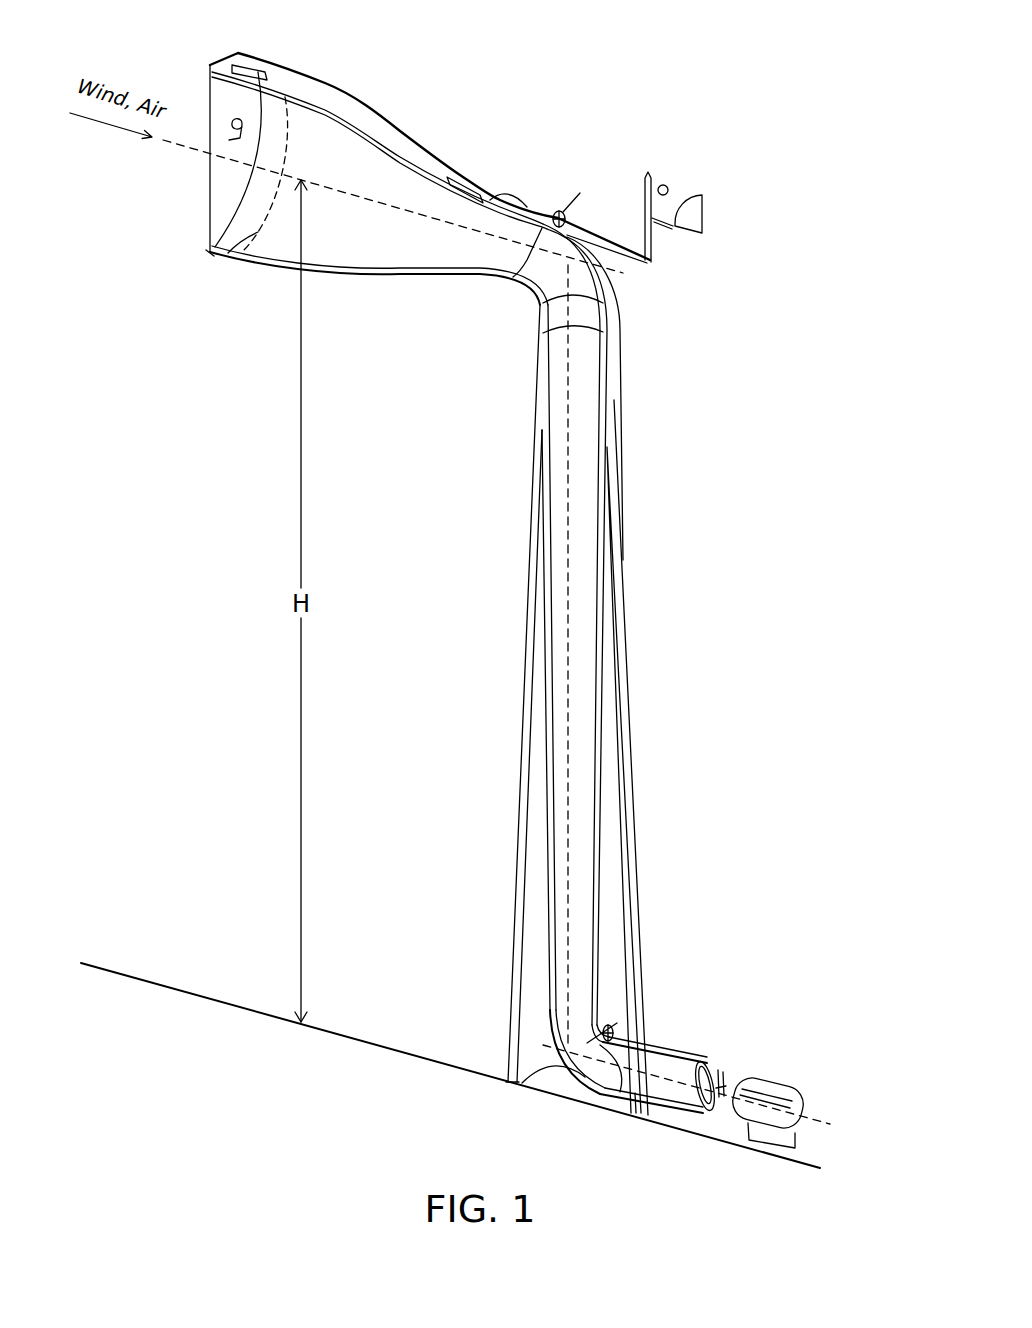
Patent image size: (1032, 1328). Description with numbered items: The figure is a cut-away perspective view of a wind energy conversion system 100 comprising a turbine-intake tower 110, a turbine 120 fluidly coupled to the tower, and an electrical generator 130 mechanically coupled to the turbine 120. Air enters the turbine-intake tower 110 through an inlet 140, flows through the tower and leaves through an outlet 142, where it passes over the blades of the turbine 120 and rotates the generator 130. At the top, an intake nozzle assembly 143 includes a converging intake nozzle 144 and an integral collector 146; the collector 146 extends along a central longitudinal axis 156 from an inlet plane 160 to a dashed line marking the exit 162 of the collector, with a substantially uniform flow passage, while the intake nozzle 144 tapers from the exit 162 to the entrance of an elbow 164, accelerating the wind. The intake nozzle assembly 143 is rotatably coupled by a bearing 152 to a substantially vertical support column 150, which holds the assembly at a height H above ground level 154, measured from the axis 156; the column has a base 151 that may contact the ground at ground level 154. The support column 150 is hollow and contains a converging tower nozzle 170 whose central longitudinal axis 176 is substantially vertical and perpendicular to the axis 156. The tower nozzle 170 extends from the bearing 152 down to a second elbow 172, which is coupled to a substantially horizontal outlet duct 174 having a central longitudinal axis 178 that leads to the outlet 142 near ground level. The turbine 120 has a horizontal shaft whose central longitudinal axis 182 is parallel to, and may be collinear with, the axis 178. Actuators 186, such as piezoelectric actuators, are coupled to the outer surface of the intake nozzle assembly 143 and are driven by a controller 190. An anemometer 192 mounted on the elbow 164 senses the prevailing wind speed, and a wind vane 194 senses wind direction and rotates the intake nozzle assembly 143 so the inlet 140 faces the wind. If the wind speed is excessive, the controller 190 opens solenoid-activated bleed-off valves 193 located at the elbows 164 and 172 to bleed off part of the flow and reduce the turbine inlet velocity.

The wind energy conversion system 100 is at (792, 147).
The turbine-intake tower 110 is at (657, 387).
The turbine 120 is at (733, 1077).
The electrical generator 130 is at (762, 1097).
The inlet 140 is at (228, 88).
The outlet 142 is at (720, 1080).
The intake nozzle assembly 143 is at (247, 57).
The converging intake nozzle 144 is at (280, 273).
The collector 146 is at (263, 187).
The support column 150 is at (640, 817).
The base 151 is at (507, 1077).
The bearing 152 is at (553, 313).
The ground level 154 is at (793, 1157).
The central longitudinal axis 156 is at (397, 213).
The inlet plane 160 is at (225, 128).
The exit of collector 162 is at (220, 253).
The elbow 164 is at (547, 266).
The converging tower nozzle 170 is at (557, 577).
The elbow 172 is at (577, 1090).
The outlet duct 174 is at (667, 1047).
The central longitudinal axis 176 is at (567, 460).
The central longitudinal axis 178 is at (640, 1113).
The central longitudinal axis 182 is at (813, 1120).
The actuators 186 is at (453, 170).
The controller 190 is at (500, 190).
The anemometer 192 is at (665, 185).
The bleed-off valves 193 is at (556, 211).
The wind vane 194 is at (703, 195).